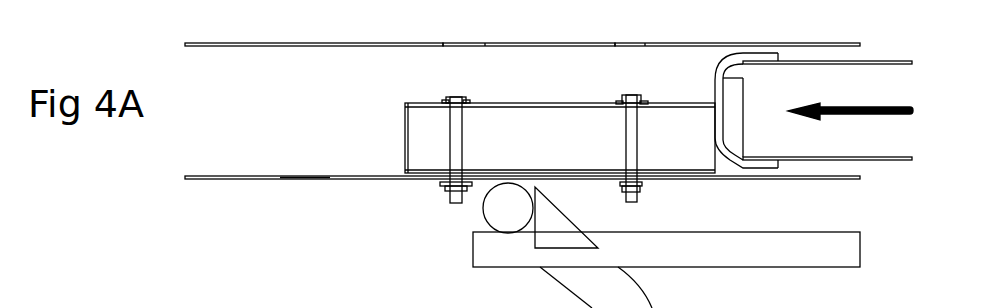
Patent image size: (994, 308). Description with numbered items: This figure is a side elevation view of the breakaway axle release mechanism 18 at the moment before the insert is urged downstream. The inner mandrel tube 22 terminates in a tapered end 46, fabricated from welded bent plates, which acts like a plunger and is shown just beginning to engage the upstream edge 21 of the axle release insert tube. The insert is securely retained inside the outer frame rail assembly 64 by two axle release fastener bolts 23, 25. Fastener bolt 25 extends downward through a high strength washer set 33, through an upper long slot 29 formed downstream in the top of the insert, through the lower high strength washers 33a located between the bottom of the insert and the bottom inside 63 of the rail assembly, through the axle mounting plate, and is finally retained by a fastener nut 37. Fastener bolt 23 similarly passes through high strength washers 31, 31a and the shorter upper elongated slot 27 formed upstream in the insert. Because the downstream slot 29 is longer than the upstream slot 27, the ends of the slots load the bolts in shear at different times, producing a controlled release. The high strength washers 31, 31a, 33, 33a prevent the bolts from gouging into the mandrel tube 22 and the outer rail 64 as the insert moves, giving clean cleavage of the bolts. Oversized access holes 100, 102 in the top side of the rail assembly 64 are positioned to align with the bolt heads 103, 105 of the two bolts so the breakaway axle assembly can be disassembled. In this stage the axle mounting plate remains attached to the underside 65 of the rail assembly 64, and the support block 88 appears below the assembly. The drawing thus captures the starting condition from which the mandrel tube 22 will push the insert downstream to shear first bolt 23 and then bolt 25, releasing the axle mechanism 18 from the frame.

The axle release mechanism 18 is at (508, 205).
The upstream edge of the axle release insert tube 21 is at (723, 161).
The mandrel tube 22 is at (836, 59).
The fastener bolt 23 is at (633, 136).
The axle release fastener bolt 25 is at (454, 127).
The upper elongated slot 27 is at (646, 102).
The upper long slot 29 is at (481, 102).
The high strength washer 31 is at (624, 101).
The high strength washer 31a is at (645, 186).
The high strength washer set 33 is at (447, 99).
The high strength washers 33a is at (436, 185).
The fastener nut 37 is at (449, 193).
The tapered end 46 is at (734, 56).
The bottom inside of rail assembly 63 is at (305, 168).
The frame rail assembly 64 is at (250, 40).
The underside of the frame rail assembly 65 is at (202, 183).
The support block 88 is at (813, 252).
The oversized access hole 100 is at (458, 41).
The oversized access hole 102 is at (634, 40).
The bolt head 103 is at (458, 97).
The bolt head 105 is at (631, 96).